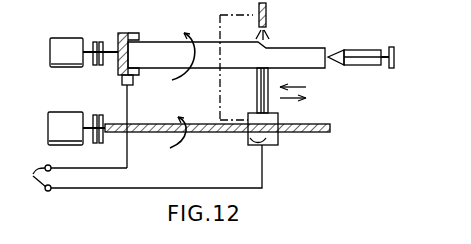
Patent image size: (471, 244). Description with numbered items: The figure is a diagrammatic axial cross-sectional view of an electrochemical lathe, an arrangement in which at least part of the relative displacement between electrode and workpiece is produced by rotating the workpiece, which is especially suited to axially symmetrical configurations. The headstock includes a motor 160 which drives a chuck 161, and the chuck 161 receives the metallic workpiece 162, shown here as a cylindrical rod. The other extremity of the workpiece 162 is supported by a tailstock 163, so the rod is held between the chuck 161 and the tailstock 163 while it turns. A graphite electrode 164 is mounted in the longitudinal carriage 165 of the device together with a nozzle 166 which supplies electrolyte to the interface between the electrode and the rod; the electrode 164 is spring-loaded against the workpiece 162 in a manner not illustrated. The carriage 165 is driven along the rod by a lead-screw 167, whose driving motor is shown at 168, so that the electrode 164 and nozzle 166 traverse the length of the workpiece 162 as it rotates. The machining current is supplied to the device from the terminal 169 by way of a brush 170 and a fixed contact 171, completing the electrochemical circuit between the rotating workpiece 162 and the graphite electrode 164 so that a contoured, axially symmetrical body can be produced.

The motor 160 is at (52, 39).
The chuck 161 is at (124, 33).
The metallic workpiece 162 is at (314, 68).
The tailstock 163 is at (362, 54).
The graphite electrode 164 is at (257, 97).
The longitudinal carriage 165 is at (278, 143).
The nozzle 166 is at (267, 20).
The lead-screw 167 is at (330, 130).
The motor 168 is at (48, 125).
The terminal 169 is at (132, 168).
The brush 170 is at (130, 83).
The fixed contact 171 is at (258, 141).